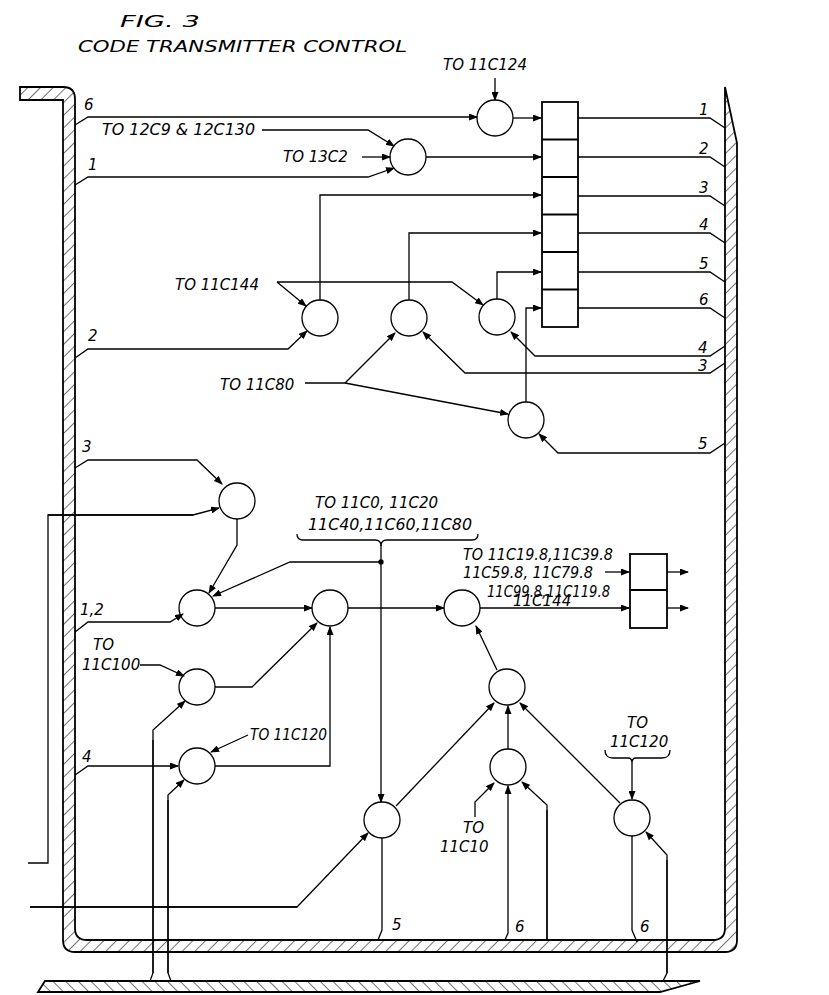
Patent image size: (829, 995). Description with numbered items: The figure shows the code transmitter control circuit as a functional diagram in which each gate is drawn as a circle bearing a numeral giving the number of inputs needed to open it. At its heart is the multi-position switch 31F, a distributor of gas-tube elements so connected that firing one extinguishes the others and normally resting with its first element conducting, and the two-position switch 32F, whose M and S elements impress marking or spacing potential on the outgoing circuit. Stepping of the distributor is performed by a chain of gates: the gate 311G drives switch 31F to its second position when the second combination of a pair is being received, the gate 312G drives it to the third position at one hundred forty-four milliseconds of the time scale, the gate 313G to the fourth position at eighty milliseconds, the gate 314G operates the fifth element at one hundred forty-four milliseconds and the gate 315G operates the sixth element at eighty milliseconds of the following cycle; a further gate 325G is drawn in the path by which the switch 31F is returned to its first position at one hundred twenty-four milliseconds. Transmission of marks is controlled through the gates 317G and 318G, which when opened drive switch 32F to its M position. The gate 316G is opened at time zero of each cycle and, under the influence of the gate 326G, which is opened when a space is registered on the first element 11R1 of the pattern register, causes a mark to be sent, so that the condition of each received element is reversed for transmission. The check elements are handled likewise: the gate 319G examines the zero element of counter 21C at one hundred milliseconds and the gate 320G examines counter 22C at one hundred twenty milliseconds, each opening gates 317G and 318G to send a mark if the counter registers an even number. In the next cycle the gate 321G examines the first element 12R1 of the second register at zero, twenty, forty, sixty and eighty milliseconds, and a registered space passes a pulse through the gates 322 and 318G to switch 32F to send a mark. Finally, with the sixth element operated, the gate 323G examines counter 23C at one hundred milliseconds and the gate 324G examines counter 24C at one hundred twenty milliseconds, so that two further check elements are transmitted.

The multi-position switch 31F is at (560, 205).
The two position switch 32F is at (648, 580).
The gate 311G is at (430, 154).
The gate 312G is at (338, 312).
The gate 313G is at (392, 318).
The gate 314G is at (492, 329).
The gate 315G is at (542, 411).
The gate 316G is at (177, 602).
The gate 317G is at (332, 598).
The gate 318G is at (445, 604).
The gate 319G is at (200, 675).
The gate 320G is at (192, 756).
The gate 321G is at (364, 814).
The gate 322 is at (515, 676).
The gate 323G is at (530, 765).
The gate 324G is at (654, 812).
The AND gate 325G is at (472, 111).
The gate 326G is at (240, 490).
The first element of pattern register 11R1 is at (120, 505).
The first element of second register 12R1 is at (134, 904).
The counter 21C is at (153, 850).
The counter 22C is at (168, 850).
The counter 23C is at (547, 876).
The counter 24C is at (667, 884).